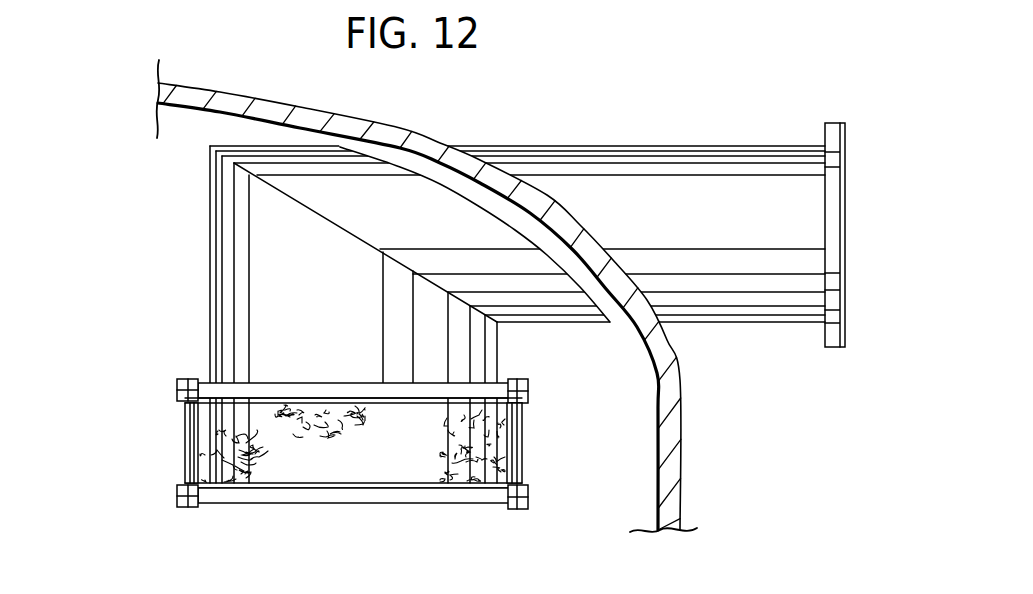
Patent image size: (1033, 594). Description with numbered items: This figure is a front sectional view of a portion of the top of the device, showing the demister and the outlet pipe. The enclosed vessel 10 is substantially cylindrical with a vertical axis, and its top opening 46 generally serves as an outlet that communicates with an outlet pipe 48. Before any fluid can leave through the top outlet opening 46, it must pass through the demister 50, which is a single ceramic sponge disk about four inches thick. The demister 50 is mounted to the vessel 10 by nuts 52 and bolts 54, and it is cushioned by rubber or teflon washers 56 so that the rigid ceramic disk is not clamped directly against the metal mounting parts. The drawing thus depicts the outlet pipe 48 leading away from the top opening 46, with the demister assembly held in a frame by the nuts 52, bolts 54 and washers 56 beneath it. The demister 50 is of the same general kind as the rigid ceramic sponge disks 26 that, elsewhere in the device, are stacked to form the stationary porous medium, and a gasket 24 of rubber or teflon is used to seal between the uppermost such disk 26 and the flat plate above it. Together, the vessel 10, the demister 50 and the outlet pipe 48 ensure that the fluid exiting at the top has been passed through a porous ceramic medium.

The enclosed vessel 10 is at (681, 466).
The gasket 24 is at (513, 463).
The rigid ceramic sponge disk 26 is at (303, 467).
The top opening 46 is at (845, 183).
The outlet pipe 48 is at (700, 146).
The demister 50 is at (448, 491).
The nuts 52 is at (185, 380).
The bolts 54 is at (185, 442).
The rubber or teflon washers 56 is at (182, 403).